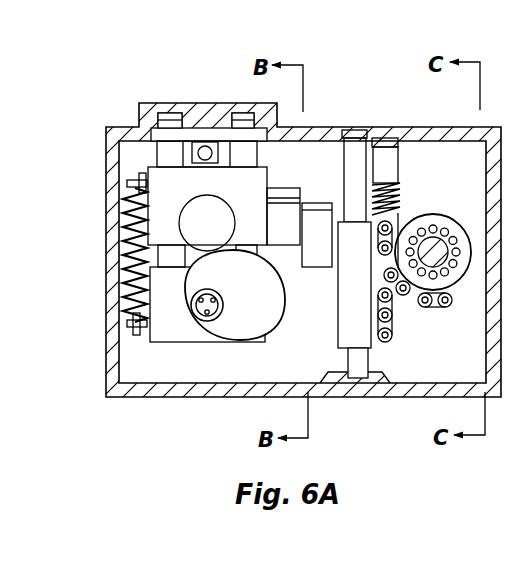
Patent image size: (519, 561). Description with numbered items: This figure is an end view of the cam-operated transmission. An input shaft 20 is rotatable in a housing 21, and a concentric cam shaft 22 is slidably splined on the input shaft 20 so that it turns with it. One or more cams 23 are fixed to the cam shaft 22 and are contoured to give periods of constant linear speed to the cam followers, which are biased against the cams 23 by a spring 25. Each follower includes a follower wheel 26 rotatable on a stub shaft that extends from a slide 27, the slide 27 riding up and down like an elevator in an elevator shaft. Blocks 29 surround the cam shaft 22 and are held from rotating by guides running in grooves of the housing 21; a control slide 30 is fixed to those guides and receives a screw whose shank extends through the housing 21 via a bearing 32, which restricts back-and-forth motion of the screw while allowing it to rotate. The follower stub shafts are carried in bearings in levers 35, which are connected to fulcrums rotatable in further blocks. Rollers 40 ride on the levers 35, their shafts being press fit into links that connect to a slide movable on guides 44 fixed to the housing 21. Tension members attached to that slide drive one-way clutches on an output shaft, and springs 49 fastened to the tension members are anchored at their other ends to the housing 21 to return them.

The input shaft 20 is at (210, 321).
The housing 21 is at (423, 390).
The cam shaft 22 is at (190, 320).
The cam 23 is at (262, 328).
The spring 25 is at (133, 203).
The follower wheel 26 is at (131, 253).
The slide 27 is at (200, 222).
The block 29 is at (165, 335).
The control slide 30 is at (172, 116).
The bearing 32 is at (243, 114).
The lever 35 is at (287, 208).
The roller 40 is at (320, 218).
The guide 44 is at (362, 372).
The spring 49 is at (390, 138).